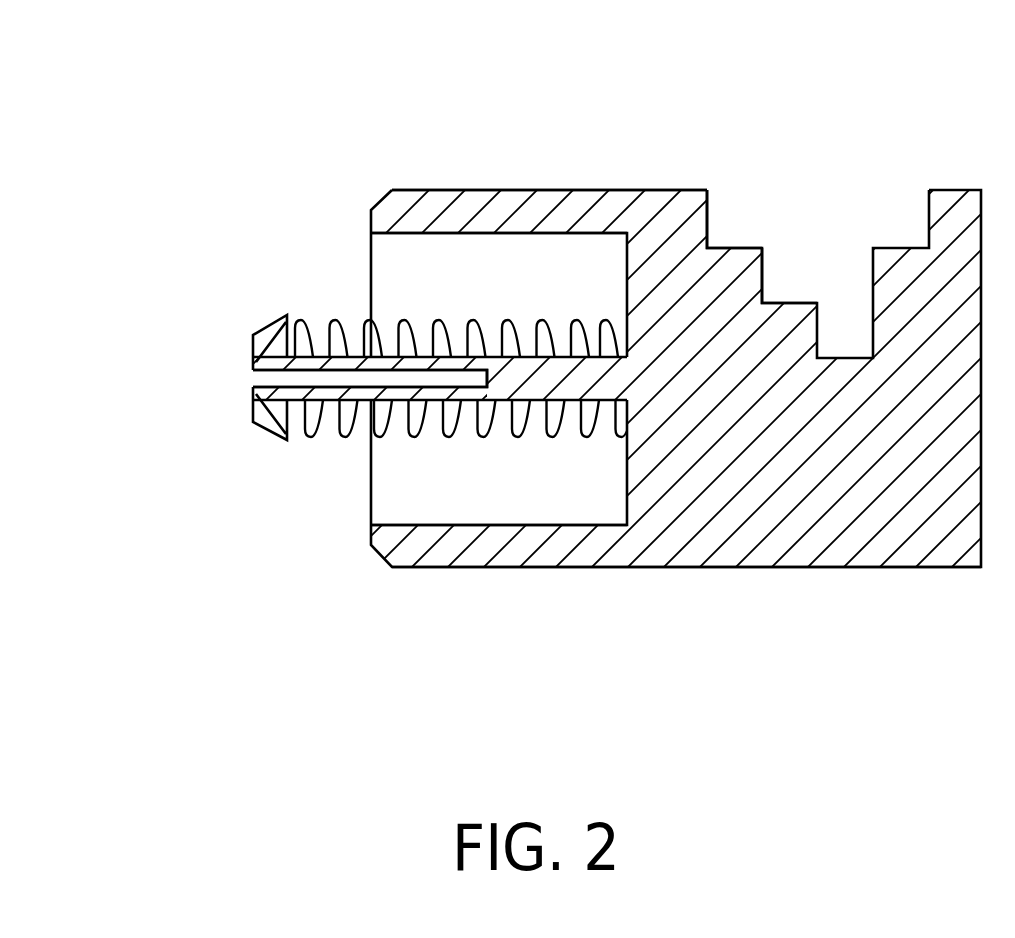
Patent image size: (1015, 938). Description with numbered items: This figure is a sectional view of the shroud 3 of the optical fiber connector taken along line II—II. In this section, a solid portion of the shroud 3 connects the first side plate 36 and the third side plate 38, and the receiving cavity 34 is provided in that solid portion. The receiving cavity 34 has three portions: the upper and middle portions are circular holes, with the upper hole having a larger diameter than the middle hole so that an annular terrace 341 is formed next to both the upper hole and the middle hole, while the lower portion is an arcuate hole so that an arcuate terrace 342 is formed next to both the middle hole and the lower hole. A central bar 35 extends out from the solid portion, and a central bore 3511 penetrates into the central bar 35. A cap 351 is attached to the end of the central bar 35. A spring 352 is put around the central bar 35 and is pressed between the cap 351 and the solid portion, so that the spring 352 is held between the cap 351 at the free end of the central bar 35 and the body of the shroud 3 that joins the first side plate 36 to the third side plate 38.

The shroud 3 is at (473, 167).
The receiving cavity 34 is at (843, 218).
The annular terrace 341 is at (725, 243).
The arcuate terrace 342 is at (785, 298).
The central bar 35 is at (336, 364).
The cap 351 is at (268, 352).
The central bore 3511 is at (268, 377).
The spring 352 is at (457, 418).
The first side plate 36 is at (587, 220).
The third side plate 38 is at (577, 550).